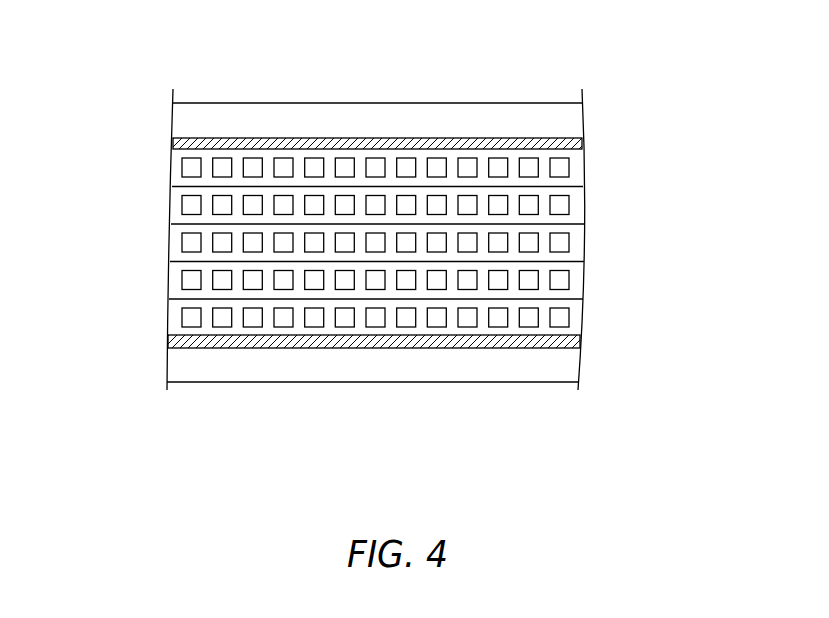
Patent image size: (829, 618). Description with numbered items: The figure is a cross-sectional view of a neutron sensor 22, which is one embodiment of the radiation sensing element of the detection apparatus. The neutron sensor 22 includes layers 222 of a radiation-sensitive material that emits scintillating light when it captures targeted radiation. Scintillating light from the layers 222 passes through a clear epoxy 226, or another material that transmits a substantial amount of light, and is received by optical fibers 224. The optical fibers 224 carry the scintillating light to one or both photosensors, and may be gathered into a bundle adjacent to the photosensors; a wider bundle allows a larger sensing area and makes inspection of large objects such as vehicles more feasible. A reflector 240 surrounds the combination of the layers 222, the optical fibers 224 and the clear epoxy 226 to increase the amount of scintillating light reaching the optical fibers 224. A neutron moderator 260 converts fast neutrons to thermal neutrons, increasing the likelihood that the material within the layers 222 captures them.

The neutron sensor 22 is at (568, 46).
The layers 222 is at (157, 292).
The optical fibers 224 is at (566, 318).
The clear epoxy 226 is at (327, 237).
The reflector 240 is at (236, 137).
The neutron moderator 260 is at (570, 129).